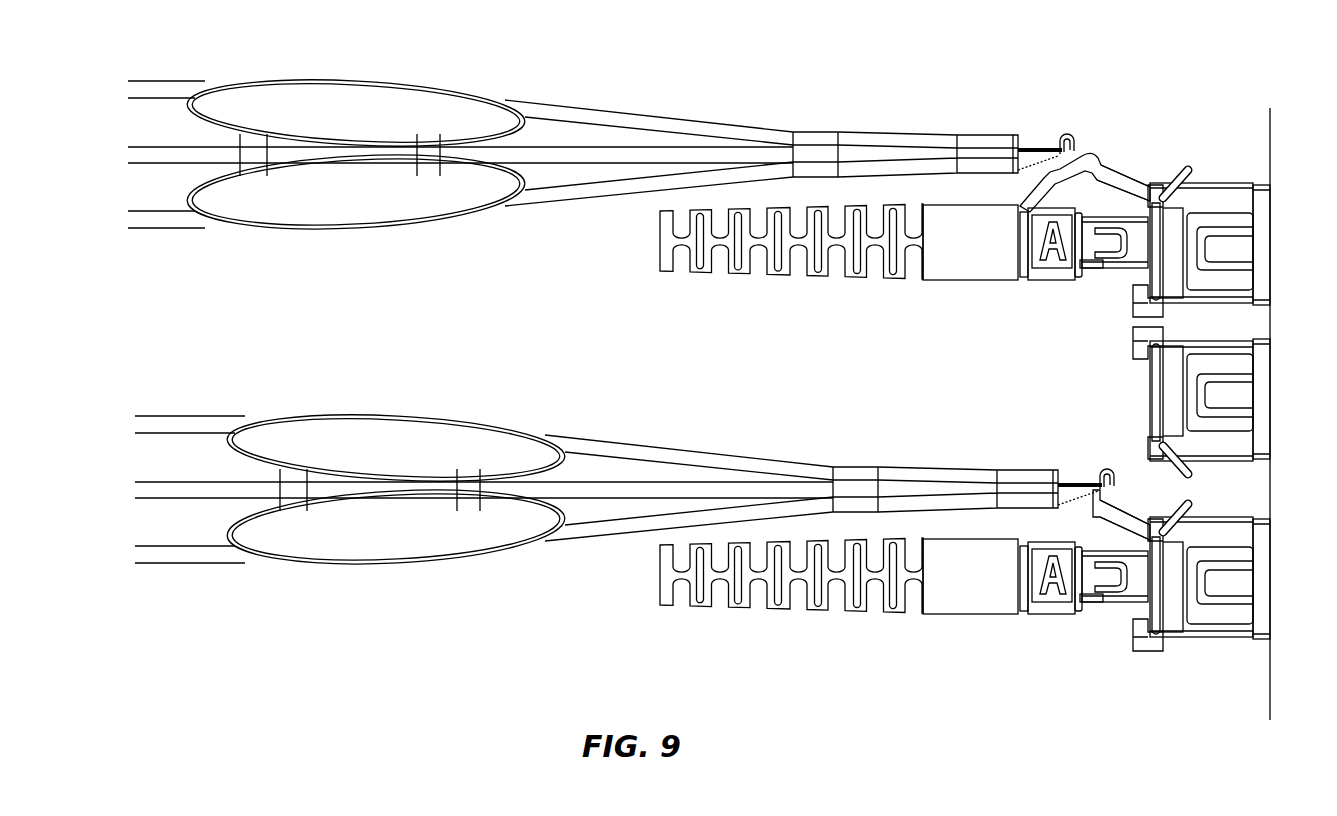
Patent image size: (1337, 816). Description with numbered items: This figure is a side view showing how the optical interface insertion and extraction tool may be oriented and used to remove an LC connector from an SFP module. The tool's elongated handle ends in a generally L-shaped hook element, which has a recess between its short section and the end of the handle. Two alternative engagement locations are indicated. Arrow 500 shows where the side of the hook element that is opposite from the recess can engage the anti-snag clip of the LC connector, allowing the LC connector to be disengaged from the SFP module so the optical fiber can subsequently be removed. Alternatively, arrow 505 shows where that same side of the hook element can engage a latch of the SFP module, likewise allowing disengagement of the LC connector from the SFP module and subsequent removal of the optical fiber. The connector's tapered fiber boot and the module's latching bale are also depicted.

The arrow 500 is at (1061, 143).
The arrow 505 is at (1098, 480).